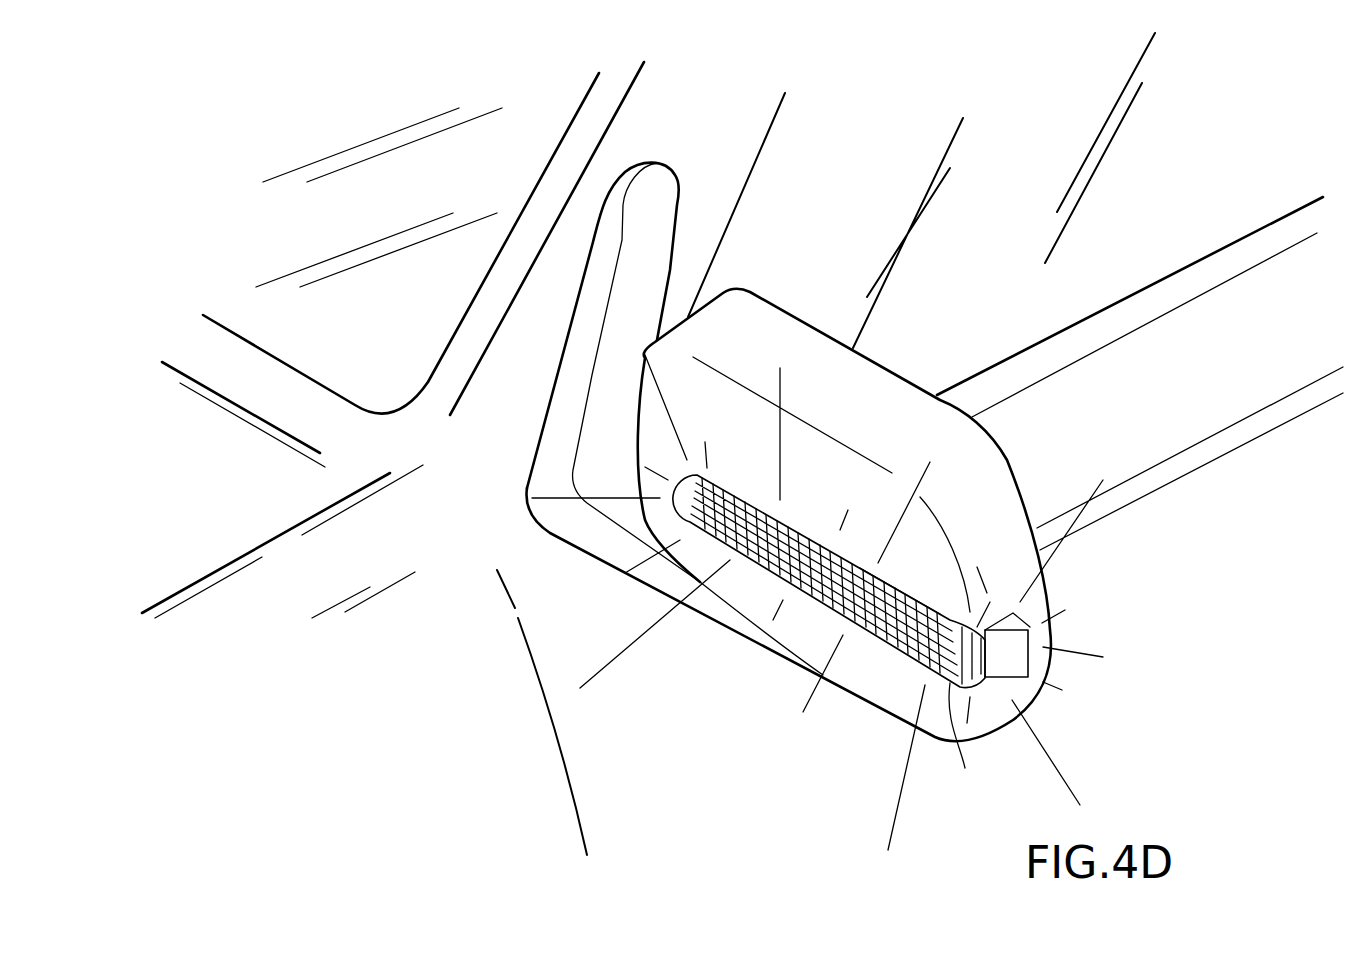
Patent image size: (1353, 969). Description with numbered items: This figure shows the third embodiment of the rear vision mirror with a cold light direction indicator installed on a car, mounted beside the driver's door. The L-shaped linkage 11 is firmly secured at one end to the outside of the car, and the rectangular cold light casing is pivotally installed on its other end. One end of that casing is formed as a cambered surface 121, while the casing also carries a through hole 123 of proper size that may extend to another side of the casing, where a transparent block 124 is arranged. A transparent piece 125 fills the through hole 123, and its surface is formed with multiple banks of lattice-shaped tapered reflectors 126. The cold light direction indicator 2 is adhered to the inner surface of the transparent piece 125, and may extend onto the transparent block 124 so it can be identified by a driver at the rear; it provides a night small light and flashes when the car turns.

The linkage 11 is at (562, 412).
The cambered surface 121 is at (1008, 460).
The cold light direction indicator 2 is at (805, 537).
The transparent piece 125 is at (900, 617).
The through hole 123 is at (1042, 625).
The transparent block 124 is at (1010, 663).
The tapered reflectors 126 is at (967, 744).